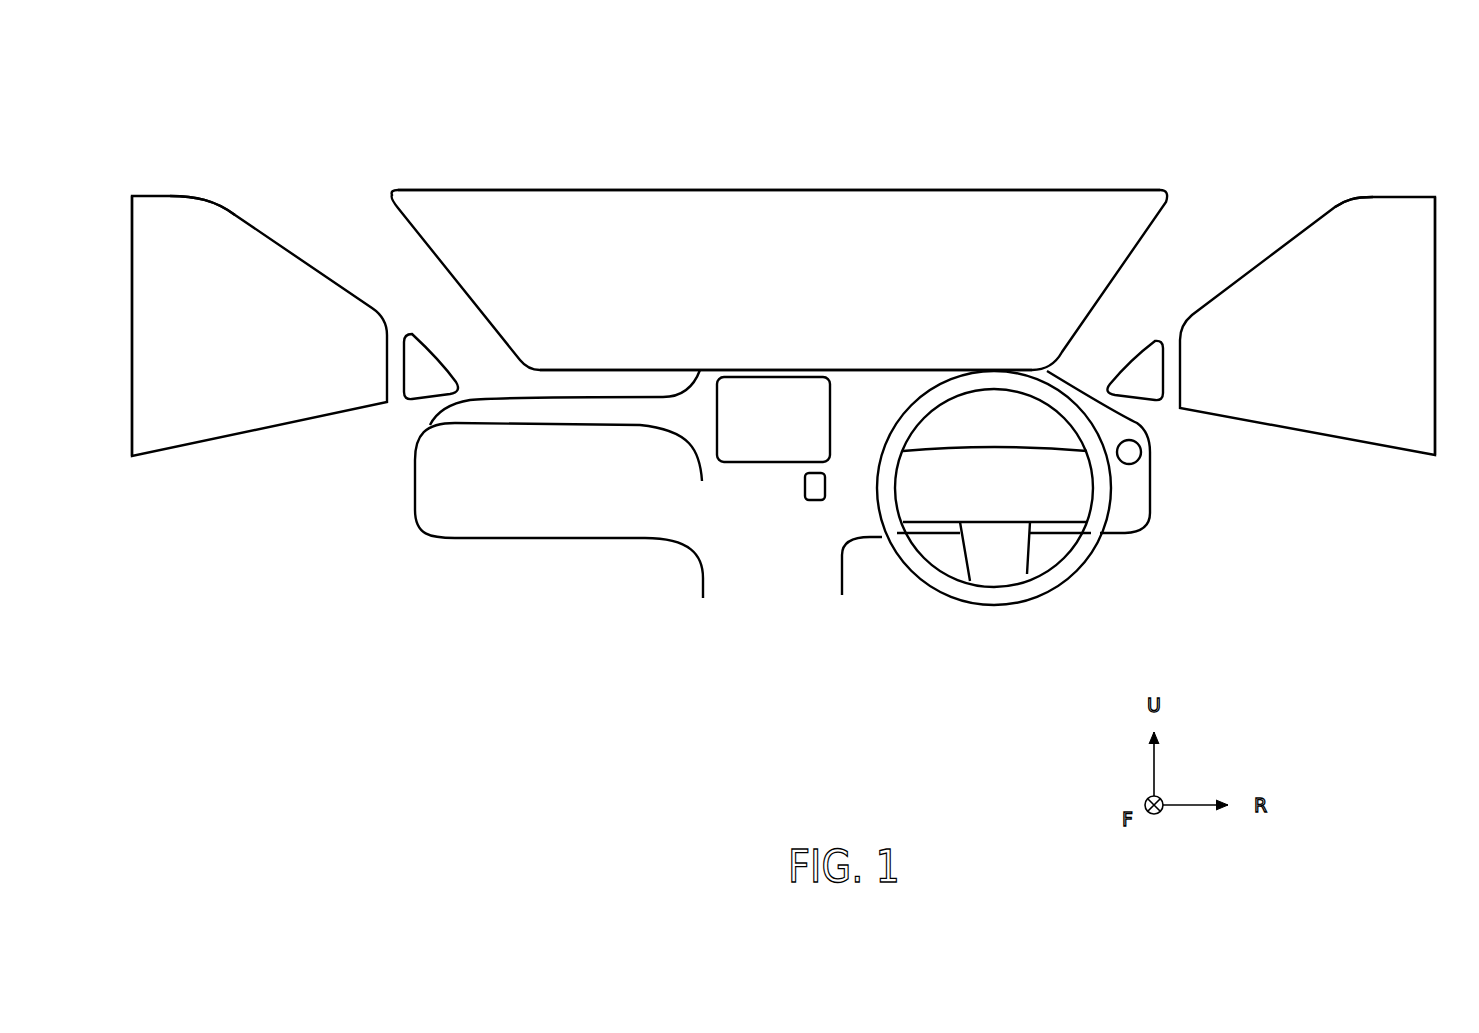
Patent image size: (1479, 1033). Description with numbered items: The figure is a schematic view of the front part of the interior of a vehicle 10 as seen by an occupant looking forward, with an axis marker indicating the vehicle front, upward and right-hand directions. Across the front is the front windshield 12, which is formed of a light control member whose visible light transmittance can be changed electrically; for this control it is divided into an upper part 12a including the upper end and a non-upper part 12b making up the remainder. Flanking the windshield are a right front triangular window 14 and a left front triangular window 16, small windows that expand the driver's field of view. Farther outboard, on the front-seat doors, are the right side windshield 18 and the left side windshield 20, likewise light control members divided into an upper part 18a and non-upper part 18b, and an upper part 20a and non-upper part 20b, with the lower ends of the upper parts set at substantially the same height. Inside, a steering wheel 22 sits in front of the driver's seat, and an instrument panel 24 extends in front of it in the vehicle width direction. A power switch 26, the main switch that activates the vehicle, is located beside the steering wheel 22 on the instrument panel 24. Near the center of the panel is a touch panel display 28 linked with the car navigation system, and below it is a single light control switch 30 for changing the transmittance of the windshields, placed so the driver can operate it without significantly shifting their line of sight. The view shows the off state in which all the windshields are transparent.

The vehicle 10 is at (620, 98).
The front windshield 12 is at (957, 190).
The upper part 12a is at (977, 207).
The non-upper part 12b is at (984, 274).
The right front triangular window 14 is at (1158, 338).
The left front triangular window 16 is at (407, 336).
The right side windshield 18 is at (1343, 197).
The upper part 18a is at (1371, 220).
The non-upper part 18b is at (1410, 302).
The left side windshield 20 is at (247, 208).
The upper part 20a is at (181, 215).
The non-upper part 20b is at (147, 310).
The steering wheel 22 is at (957, 597).
The instrument panel 24 is at (808, 552).
The power switch 26 is at (1137, 461).
The touch panel display 28 is at (730, 465).
The light control switch 30 is at (805, 494).